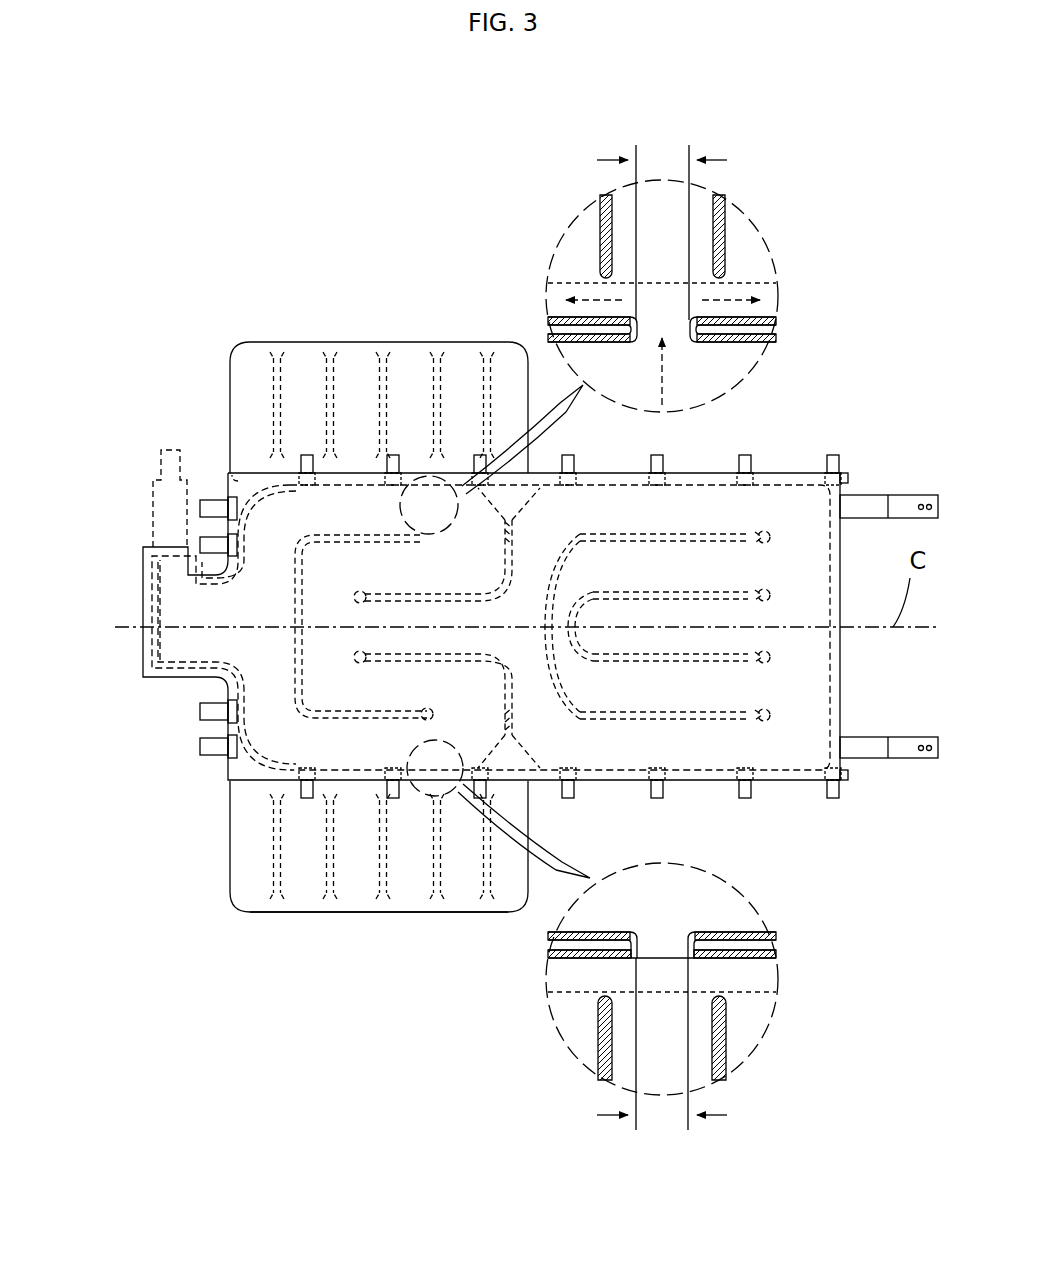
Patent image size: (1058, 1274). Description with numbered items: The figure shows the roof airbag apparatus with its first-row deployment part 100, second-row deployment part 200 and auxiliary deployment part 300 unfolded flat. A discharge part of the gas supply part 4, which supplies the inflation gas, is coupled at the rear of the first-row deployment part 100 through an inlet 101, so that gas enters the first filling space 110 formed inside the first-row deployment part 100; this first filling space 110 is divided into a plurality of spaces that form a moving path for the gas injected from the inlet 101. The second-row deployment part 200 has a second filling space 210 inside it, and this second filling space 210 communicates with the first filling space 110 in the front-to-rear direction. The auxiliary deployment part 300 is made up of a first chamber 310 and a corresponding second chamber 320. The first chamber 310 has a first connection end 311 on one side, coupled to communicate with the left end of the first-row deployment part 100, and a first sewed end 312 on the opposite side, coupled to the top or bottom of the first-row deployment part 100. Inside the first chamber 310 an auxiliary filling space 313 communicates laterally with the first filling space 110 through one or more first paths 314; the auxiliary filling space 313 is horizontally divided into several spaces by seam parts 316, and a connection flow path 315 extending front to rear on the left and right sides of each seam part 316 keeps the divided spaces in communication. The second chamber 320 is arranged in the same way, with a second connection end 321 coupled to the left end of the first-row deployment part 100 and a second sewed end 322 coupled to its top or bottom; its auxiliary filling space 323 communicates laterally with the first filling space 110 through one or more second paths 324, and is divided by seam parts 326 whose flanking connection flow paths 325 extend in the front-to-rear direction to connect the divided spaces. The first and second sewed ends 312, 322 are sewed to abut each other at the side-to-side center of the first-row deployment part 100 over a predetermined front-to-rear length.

The gas supply part 4 is at (153, 487).
The first-row deployment part 100 is at (230, 738).
The inlet 101 is at (143, 580).
The first filling space 110 is at (180, 644).
The second-row deployment part 200 is at (779, 737).
The second filling space 210 is at (710, 736).
The auxiliary deployment part 300 is at (250, 357).
The first chamber 310 is at (307, 880).
The first connection end 311 is at (422, 793).
The first sewed end 312 is at (427, 912).
The auxiliary filling space 313 is at (356, 794).
The first path 314 is at (600, 960).
The connection flow path 315 is at (748, 979).
The seam part 316 is at (328, 802).
The second chamber 320 is at (298, 358).
The second connection end 321 is at (230, 483).
The second sewed end 322 is at (365, 355).
The auxiliary filling space 323 is at (598, 268).
The second path 324 is at (633, 327).
The connection flow path 325 is at (748, 294).
The seam part 326 is at (387, 418).